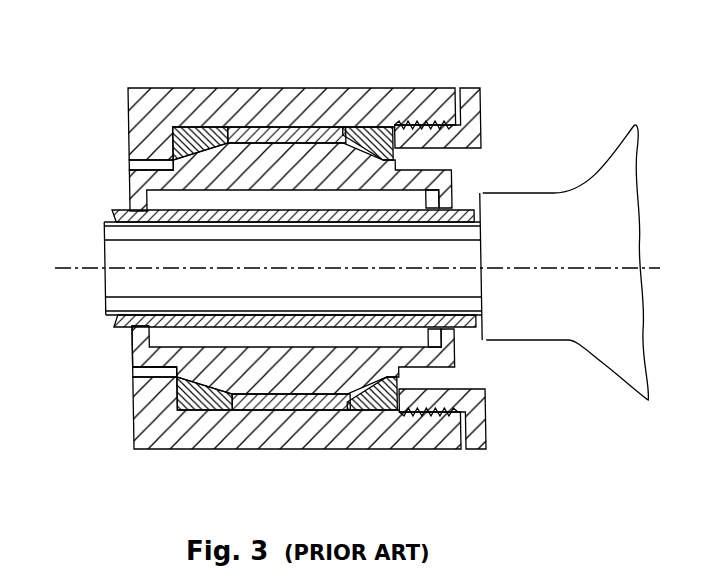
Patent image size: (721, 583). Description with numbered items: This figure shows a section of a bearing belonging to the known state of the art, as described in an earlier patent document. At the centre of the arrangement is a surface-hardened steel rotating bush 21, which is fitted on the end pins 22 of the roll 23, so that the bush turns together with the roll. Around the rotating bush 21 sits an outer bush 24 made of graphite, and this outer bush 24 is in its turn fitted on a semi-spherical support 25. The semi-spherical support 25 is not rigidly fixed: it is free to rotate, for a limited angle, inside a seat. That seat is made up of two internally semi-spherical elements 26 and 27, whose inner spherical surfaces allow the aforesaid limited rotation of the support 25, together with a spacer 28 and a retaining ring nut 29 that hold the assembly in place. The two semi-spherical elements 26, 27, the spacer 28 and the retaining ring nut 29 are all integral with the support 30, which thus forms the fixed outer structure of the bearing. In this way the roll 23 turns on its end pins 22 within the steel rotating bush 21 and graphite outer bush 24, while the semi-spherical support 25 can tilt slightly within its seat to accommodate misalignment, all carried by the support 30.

The rotating bush 21 is at (140, 336).
The end pins 22 is at (128, 288).
The roll 23 is at (610, 172).
The outer bush 24 is at (418, 337).
The semi-spherical support 25 is at (295, 155).
The internally semi-spherical element 26 is at (181, 449).
The internally semi-spherical element 27 is at (377, 411).
The spacer 28 is at (290, 409).
The retaining ring nut 29 is at (482, 104).
The support 30 is at (160, 105).